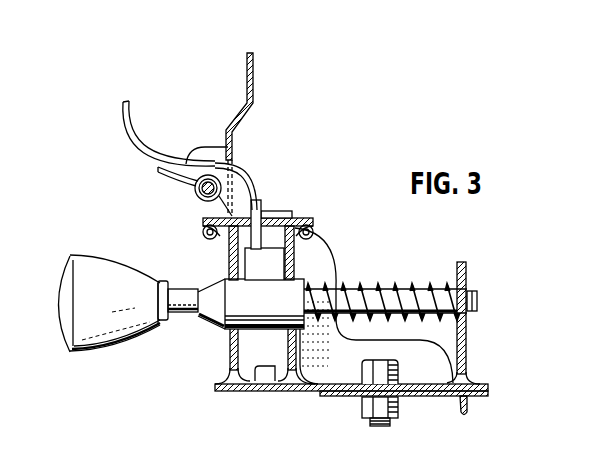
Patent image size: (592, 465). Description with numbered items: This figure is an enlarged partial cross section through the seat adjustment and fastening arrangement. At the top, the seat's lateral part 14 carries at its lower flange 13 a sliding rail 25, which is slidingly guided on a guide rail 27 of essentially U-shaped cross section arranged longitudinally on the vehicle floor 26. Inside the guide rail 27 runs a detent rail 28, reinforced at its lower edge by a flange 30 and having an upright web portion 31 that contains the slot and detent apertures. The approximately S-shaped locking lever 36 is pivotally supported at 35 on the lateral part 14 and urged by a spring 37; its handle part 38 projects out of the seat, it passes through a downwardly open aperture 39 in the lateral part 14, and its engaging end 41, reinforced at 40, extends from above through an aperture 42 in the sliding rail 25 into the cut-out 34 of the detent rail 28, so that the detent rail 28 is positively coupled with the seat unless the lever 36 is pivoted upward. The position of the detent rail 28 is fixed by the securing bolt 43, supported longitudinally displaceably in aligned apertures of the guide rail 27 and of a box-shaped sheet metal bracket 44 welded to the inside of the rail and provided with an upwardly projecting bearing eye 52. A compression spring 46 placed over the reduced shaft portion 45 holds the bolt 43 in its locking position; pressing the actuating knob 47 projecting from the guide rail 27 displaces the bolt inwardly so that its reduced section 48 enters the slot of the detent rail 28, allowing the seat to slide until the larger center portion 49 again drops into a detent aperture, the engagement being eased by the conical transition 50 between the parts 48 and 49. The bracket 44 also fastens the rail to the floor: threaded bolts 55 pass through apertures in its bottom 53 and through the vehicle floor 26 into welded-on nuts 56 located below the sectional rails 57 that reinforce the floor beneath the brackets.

The lower flange 13 is at (283, 218).
The lateral part 14 is at (253, 80).
The sliding rail 25 is at (314, 220).
The vehicle floor 26 is at (468, 398).
The guide rail 27 is at (228, 374).
The detent rail 28 is at (231, 345).
The lower reinforcing flange 30 is at (264, 375).
The upright web portion 31 is at (231, 257).
The cut-out 34 is at (302, 232).
The pivot support 35 is at (199, 190).
The locking lever 36 is at (238, 167).
The spring 37 is at (160, 170).
The handle part 38 is at (130, 118).
The aperture 39 is at (233, 152).
The reinforcement 40 is at (260, 205).
The engaging end 41 is at (261, 250).
The aperture 42 is at (290, 212).
The securing bolt 43 is at (309, 333).
The box-shaped sheet metal bracket 44 is at (467, 321).
The reduced shaft portion 45 is at (401, 289).
The compression spring 46 is at (364, 288).
The actuating knob 47 is at (121, 331).
The reduced section 48 is at (176, 287).
The larger center portion 49 is at (268, 310).
The conical transition 50 is at (214, 316).
The bearing eye 52 is at (468, 266).
The bottom 53 is at (423, 378).
The threaded bolt 55 is at (377, 423).
The welded-on nut 56 is at (364, 405).
The sectional rail 57 is at (462, 406).